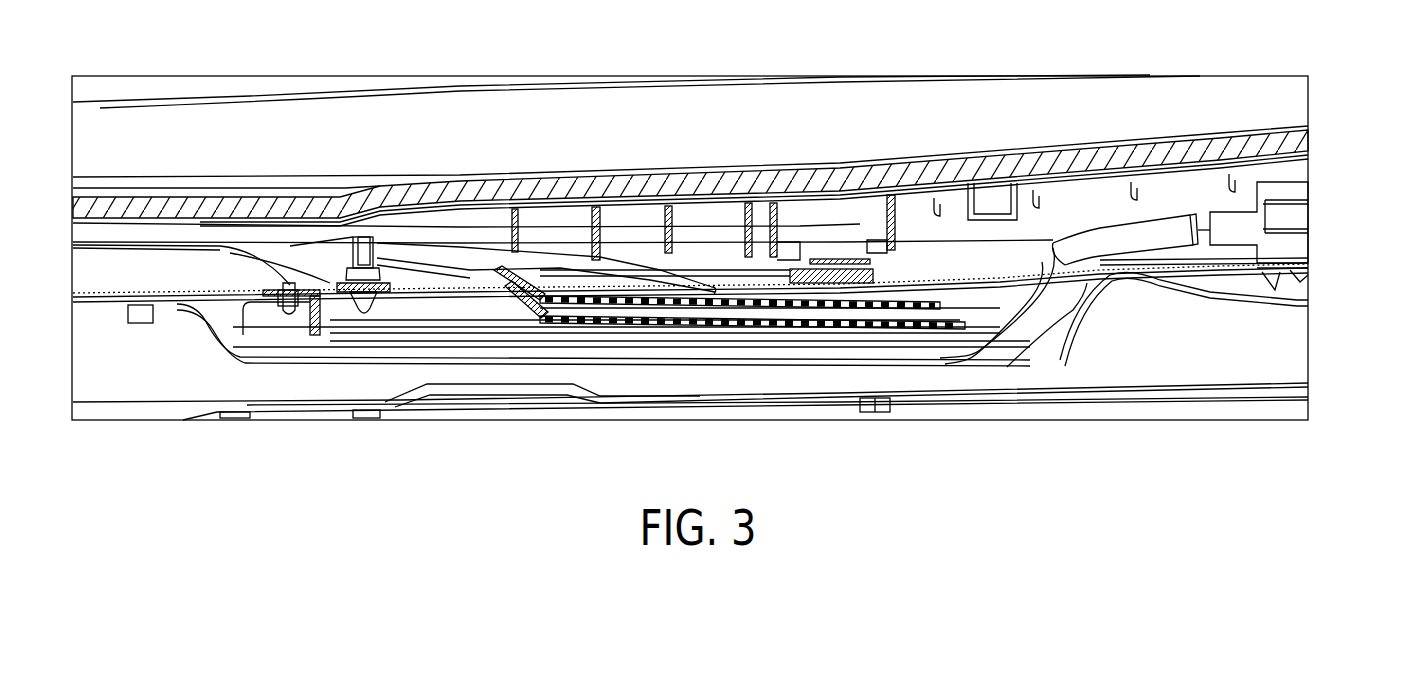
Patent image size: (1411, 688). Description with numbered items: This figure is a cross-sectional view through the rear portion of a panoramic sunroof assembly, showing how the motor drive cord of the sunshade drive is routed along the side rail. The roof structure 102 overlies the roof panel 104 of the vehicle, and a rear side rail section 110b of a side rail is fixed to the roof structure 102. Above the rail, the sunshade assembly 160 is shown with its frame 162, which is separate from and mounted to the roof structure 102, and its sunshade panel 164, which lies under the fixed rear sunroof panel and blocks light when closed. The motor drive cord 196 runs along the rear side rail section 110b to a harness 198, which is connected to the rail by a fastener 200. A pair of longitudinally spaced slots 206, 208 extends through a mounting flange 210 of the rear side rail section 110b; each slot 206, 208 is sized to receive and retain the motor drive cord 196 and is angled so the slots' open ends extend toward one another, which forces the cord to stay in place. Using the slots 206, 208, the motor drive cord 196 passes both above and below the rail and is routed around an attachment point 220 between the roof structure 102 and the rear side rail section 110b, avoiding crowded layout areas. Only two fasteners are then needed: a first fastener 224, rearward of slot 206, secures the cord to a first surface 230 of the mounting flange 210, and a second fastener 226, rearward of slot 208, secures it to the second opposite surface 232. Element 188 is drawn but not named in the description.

The sunshade assembly 160 is at (1040, 120).
The frame 162 is at (1067, 180).
The sunshade panel 164 is at (848, 167).
The rib 188 is at (555, 250).
The motor drive cord 196 is at (432, 250).
The harness 198 is at (1297, 225).
The fastener 200 is at (1300, 290).
The slot 206 is at (498, 290).
The slot 208 is at (1017, 267).
The mounting flange 210 is at (1168, 260).
The attachment point 220 is at (815, 222).
The first fastener 224 is at (360, 247).
The second fastener 226 is at (960, 333).
The first surface 230 is at (307, 290).
The second opposite surface 232 is at (1077, 278).
The roof structure 102 is at (787, 370).
The roof panel 104 is at (1037, 398).
The rear side rail section 110b is at (1228, 258).